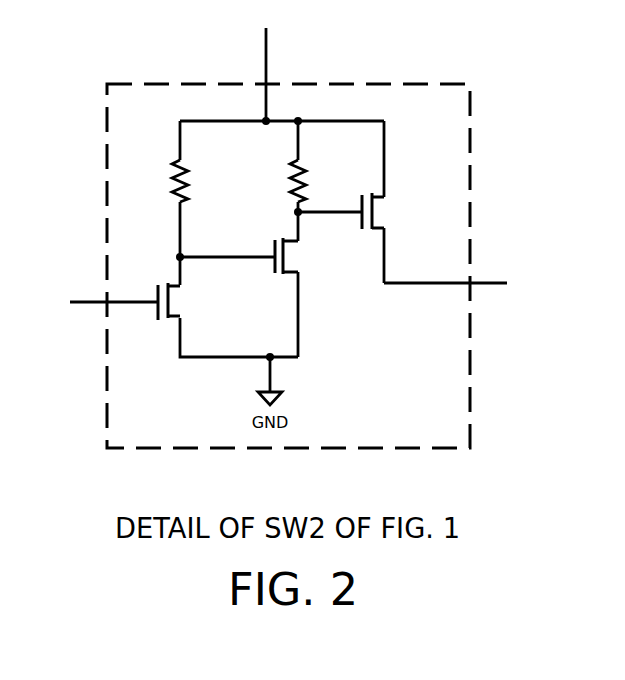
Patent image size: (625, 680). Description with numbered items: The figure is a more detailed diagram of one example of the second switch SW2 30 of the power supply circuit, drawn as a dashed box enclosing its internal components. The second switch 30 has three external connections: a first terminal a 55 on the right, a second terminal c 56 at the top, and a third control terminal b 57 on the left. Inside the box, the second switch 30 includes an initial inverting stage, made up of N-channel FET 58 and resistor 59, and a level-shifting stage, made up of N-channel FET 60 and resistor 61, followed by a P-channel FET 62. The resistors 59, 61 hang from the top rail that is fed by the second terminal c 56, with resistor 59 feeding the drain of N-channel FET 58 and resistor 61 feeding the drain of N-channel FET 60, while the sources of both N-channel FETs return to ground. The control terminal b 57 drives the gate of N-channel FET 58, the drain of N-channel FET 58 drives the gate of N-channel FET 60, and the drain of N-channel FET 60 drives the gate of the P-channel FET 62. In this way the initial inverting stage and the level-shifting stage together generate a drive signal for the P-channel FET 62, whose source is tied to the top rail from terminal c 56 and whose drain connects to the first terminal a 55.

The second switch SW2 30 is at (170, 84).
The first terminal a 55 is at (470, 283).
The second terminal c 56 is at (266, 84).
The third control terminal b 57 is at (107, 302).
The N-channel FET 58 is at (188, 310).
The resistor 59 is at (172, 182).
The N-channel FET 60 is at (305, 266).
The resistor 61 is at (290, 182).
The P-channel FET 62 is at (392, 222).